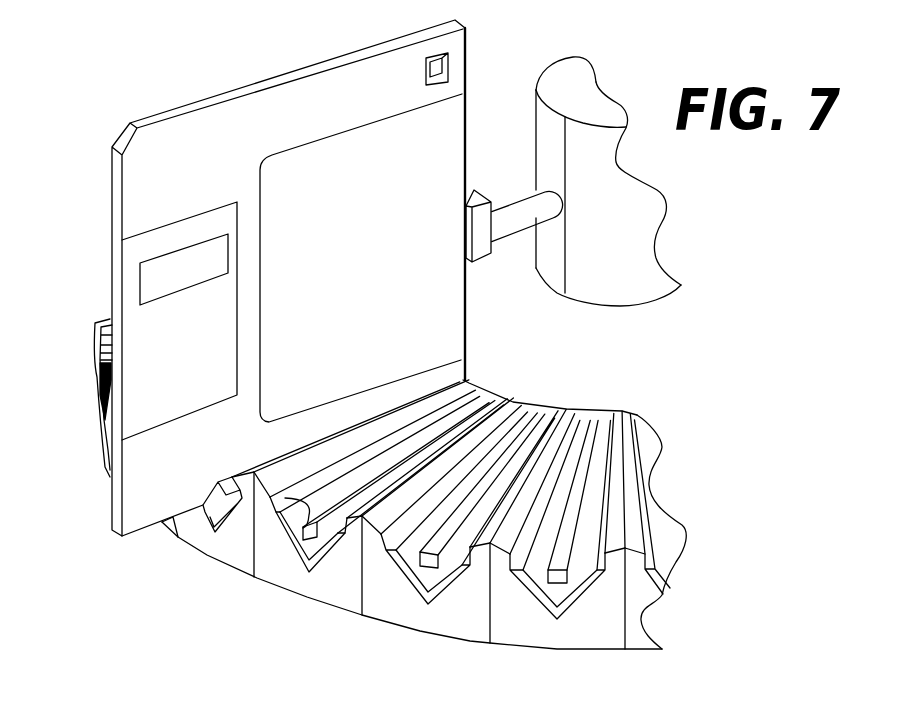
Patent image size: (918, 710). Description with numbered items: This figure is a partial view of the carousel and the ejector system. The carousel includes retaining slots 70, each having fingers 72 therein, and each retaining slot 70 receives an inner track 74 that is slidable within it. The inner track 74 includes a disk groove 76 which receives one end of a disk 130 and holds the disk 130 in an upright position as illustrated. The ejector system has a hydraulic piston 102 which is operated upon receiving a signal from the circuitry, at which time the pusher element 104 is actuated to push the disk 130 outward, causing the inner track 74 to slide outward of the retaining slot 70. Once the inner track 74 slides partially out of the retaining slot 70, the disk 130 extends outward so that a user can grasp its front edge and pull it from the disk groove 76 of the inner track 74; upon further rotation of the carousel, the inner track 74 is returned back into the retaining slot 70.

The disk 130 is at (365, 281).
The hydraulic piston 102 is at (628, 252).
The pusher element 104 is at (500, 222).
The retaining slot 70 is at (322, 578).
The fingers 72 is at (348, 521).
The inner track 74 is at (300, 548).
The disk groove 76 is at (250, 469).